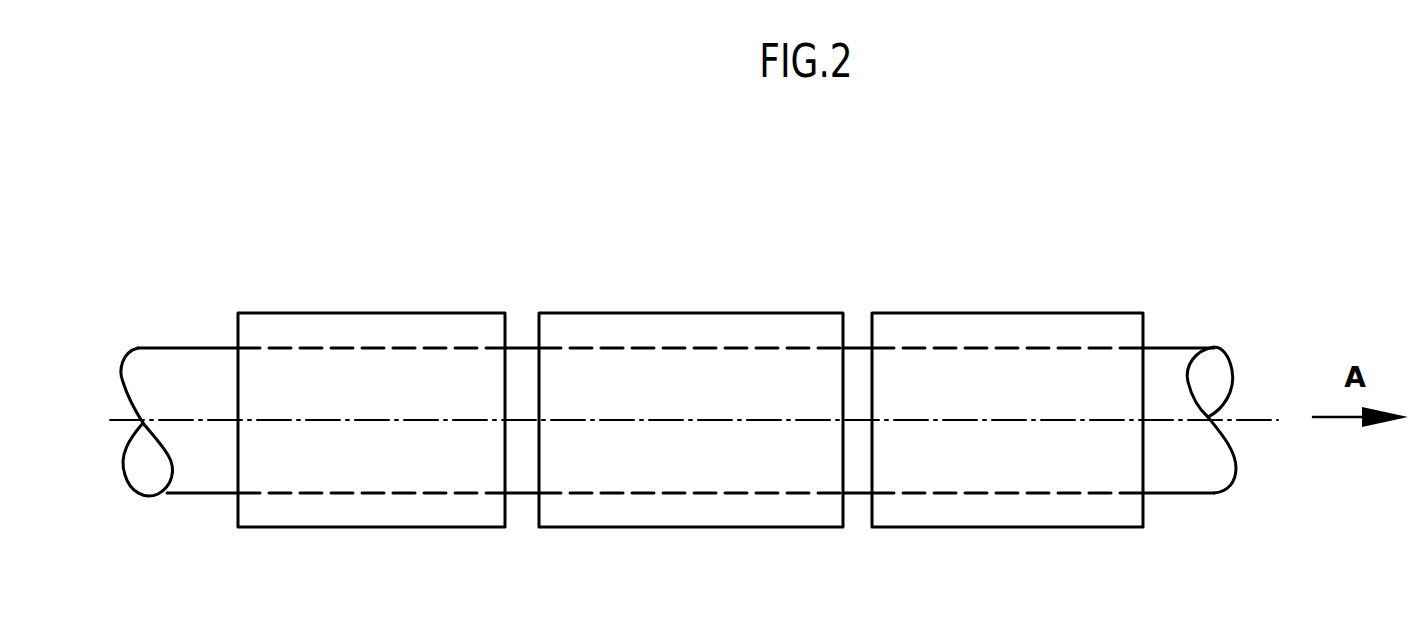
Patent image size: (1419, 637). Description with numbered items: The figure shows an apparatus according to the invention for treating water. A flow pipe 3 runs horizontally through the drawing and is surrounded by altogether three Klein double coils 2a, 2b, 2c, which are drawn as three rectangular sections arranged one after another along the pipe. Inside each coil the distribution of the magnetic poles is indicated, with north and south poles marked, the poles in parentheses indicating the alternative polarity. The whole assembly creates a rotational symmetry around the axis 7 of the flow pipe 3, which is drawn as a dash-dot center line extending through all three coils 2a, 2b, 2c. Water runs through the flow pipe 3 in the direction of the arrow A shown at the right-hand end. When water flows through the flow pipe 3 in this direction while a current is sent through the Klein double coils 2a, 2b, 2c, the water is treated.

The Klein double coil 2a is at (345, 312).
The Klein double coil 2b is at (678, 312).
The Klein double coil 2c is at (972, 312).
The flow pipe 3 is at (1165, 346).
The axis of the flow pipe 7 is at (1268, 418).